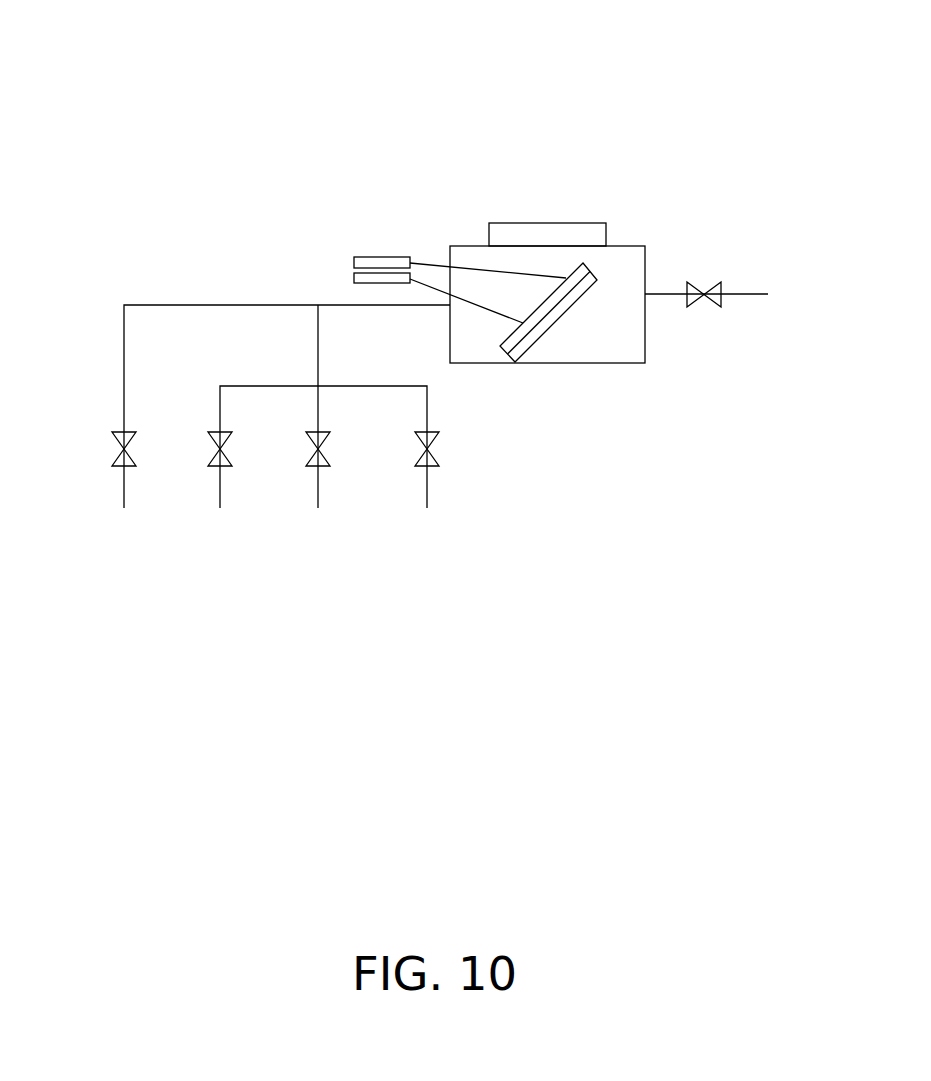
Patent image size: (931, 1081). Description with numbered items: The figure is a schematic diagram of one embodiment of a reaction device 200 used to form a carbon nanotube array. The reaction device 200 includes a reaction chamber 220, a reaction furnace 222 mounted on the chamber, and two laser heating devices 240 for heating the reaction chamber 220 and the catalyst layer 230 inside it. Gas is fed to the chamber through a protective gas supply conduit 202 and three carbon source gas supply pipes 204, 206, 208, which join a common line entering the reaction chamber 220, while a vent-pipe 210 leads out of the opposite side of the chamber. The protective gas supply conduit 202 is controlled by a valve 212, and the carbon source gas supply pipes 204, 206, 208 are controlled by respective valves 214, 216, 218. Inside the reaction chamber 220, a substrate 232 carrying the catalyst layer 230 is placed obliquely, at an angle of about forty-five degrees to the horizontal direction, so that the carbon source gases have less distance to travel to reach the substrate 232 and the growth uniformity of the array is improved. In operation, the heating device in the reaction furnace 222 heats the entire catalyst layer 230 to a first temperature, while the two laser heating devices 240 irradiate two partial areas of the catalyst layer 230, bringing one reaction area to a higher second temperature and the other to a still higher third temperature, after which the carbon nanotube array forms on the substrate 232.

The reaction device 200 is at (423, 92).
The protective gas supply conduit 202 is at (122, 480).
The carbon source gas supply pipe 204 is at (218, 480).
The carbon source gas supply pipe 206 is at (316, 478).
The carbon source gas supply pipe 208 is at (425, 478).
The vent-pipe 210 is at (748, 298).
The valve 212 is at (122, 452).
The valve 214 is at (218, 452).
The valve 216 is at (314, 451).
The valve 218 is at (424, 451).
The reaction chamber 220 is at (637, 278).
The reaction furnace 222 is at (510, 232).
The catalyst layer 230 is at (590, 268).
The substrate 232 is at (533, 335).
The laser heating devices 240 is at (353, 278).